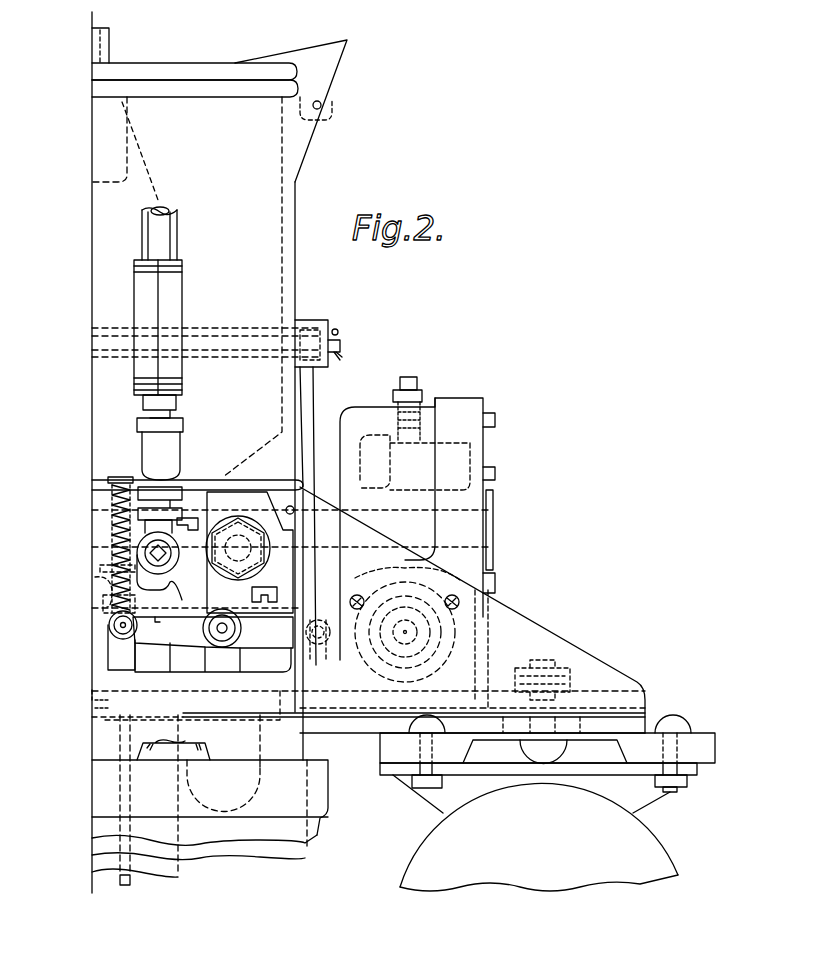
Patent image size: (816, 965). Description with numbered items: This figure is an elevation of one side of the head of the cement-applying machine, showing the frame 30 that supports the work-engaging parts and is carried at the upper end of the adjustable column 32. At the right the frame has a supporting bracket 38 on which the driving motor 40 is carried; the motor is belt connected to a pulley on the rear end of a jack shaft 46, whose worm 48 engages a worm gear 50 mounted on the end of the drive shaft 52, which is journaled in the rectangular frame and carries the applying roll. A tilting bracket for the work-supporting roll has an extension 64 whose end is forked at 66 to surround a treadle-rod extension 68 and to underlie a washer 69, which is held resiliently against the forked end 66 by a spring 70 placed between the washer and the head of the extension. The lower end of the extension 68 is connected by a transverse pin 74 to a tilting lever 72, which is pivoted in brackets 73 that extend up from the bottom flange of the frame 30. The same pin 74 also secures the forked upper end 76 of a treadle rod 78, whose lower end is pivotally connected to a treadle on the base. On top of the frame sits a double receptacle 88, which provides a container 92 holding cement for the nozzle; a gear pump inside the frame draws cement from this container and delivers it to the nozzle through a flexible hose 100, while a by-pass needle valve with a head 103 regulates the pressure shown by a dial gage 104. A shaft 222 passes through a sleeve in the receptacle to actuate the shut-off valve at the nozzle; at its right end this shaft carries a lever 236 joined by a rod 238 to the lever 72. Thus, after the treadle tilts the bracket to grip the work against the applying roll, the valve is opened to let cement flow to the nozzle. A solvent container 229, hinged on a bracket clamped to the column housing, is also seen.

The frame 30 is at (100, 680).
The adjustable column 32 is at (307, 847).
The supporting bracket 38 is at (347, 713).
The driving motor 40 is at (647, 847).
The jack shaft 46 is at (410, 630).
The worm 48 is at (487, 642).
The worm gear 50 is at (423, 440).
The drive shaft 52 is at (258, 492).
The extension 64 is at (98, 577).
The forked end 66 is at (103, 595).
The treadle-rod extension 68 is at (120, 475).
The washer 69 is at (103, 573).
The spring 70 is at (107, 528).
The tilting lever 72 is at (183, 628).
The brackets 73 is at (228, 662).
The transverse pin 74 is at (140, 625).
The forked upper end 76 is at (108, 650).
The treadle rod 78 is at (130, 882).
The double receptacle 88 is at (295, 295).
The container 92 is at (280, 265).
The flexible hose 100 is at (159, 234).
The head 103 is at (220, 520).
The dial gage 104 is at (178, 294).
The shaft 222 is at (240, 335).
The solvent container 229 is at (320, 802).
The lever 236 is at (340, 358).
The rod 238 is at (310, 385).